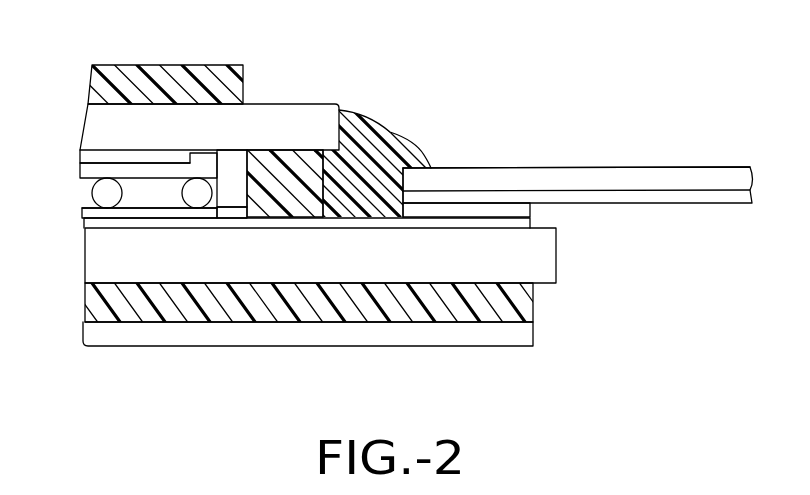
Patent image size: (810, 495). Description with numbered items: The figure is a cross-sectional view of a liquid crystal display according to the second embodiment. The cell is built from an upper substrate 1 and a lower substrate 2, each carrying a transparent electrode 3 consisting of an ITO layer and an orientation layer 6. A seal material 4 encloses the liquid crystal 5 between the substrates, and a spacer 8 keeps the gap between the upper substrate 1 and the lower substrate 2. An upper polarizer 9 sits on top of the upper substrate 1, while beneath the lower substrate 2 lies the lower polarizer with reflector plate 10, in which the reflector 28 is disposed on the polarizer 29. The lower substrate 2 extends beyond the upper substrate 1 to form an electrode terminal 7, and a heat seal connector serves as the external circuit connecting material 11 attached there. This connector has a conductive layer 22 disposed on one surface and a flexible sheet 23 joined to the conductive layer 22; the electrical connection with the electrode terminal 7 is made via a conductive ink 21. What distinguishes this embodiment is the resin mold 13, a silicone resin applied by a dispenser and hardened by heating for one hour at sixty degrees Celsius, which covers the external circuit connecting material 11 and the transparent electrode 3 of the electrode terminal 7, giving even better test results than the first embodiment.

The upper substrate 1 is at (311, 113).
The lower substrate 2 is at (548, 258).
The transparent electrode 3 is at (87, 158).
The seal material 4 is at (293, 217).
The liquid crystal 5 is at (235, 210).
The orientation layer 6 is at (82, 168).
The electrode terminal 7 is at (448, 220).
The spacer 8 is at (197, 195).
The upper polarizer 9 is at (200, 80).
The lower polarizer with reflector plate 10 is at (330, 335).
The external circuit connecting material 11 is at (589, 182).
The resin mold 13 is at (392, 134).
The conductive ink 21 is at (507, 210).
The conductive layer 22 is at (706, 195).
The flexible sheet 23 is at (680, 175).
The reflector 28 is at (525, 332).
The polarizer 29 is at (525, 300).